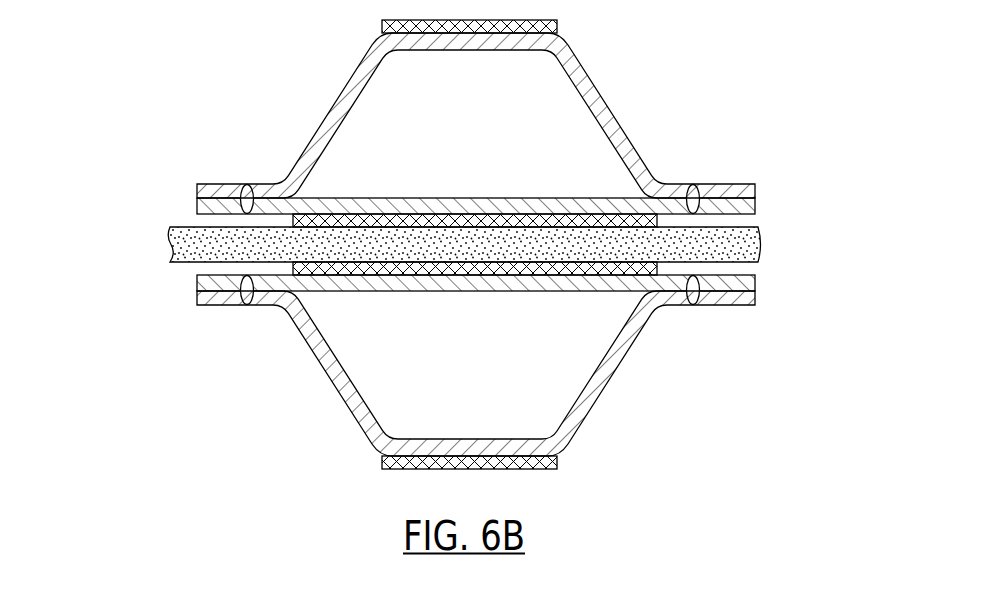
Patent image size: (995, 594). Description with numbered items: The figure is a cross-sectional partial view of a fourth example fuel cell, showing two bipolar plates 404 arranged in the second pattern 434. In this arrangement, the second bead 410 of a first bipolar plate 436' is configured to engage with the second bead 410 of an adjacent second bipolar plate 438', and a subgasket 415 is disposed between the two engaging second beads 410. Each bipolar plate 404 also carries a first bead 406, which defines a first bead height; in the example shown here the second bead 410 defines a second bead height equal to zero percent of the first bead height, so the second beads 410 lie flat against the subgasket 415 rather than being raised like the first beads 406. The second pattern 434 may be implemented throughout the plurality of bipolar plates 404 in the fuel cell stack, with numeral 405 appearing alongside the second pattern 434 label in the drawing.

The bipolar plate 404 is at (451, 247).
The flange plate 405 is at (138, 288).
The first bead 406 is at (617, 123).
The second bead 410 is at (542, 202).
The subgasket 415 is at (741, 245).
The second pattern 434 is at (403, 340).
The first bipolar plate 436' is at (738, 144).
The second bipolar plate 438' is at (719, 382).